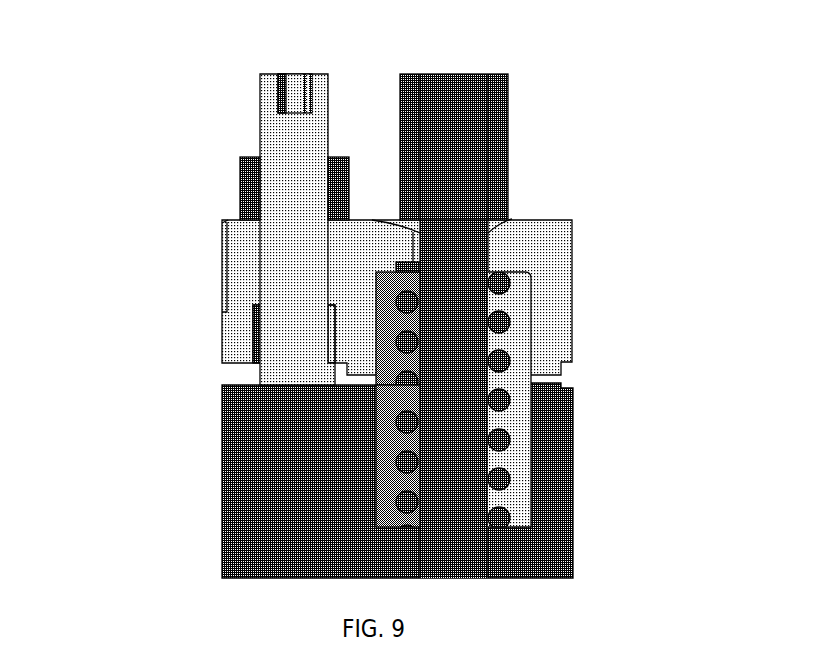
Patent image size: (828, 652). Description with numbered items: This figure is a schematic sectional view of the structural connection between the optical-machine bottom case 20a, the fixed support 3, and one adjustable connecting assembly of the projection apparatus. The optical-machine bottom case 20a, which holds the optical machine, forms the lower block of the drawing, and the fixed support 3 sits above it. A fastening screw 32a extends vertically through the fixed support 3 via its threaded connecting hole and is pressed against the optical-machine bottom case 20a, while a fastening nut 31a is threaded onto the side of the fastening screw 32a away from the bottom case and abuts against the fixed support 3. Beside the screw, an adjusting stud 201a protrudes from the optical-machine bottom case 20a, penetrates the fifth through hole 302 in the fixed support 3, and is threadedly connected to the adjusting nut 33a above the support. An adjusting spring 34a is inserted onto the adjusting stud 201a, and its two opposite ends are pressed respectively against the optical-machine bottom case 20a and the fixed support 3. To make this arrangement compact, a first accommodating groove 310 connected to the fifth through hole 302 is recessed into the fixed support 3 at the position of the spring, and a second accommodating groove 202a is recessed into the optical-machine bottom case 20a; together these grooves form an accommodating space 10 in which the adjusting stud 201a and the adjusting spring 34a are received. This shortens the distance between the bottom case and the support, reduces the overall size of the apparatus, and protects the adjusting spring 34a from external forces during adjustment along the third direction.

The fixed support 3 is at (555, 260).
The accommodating space 10 is at (246, 409).
The optical-machine bottom case 20a is at (557, 459).
The fastening nut 31a is at (240, 170).
The fastening screw 32a is at (288, 295).
The adjusting nut 33a is at (508, 78).
The adjusting spring 34a is at (500, 325).
The adjusting stud 201a is at (463, 142).
The second accommodating groove 202a is at (397, 412).
The fifth through hole 302 is at (413, 232).
The first accommodating groove 310 is at (397, 360).